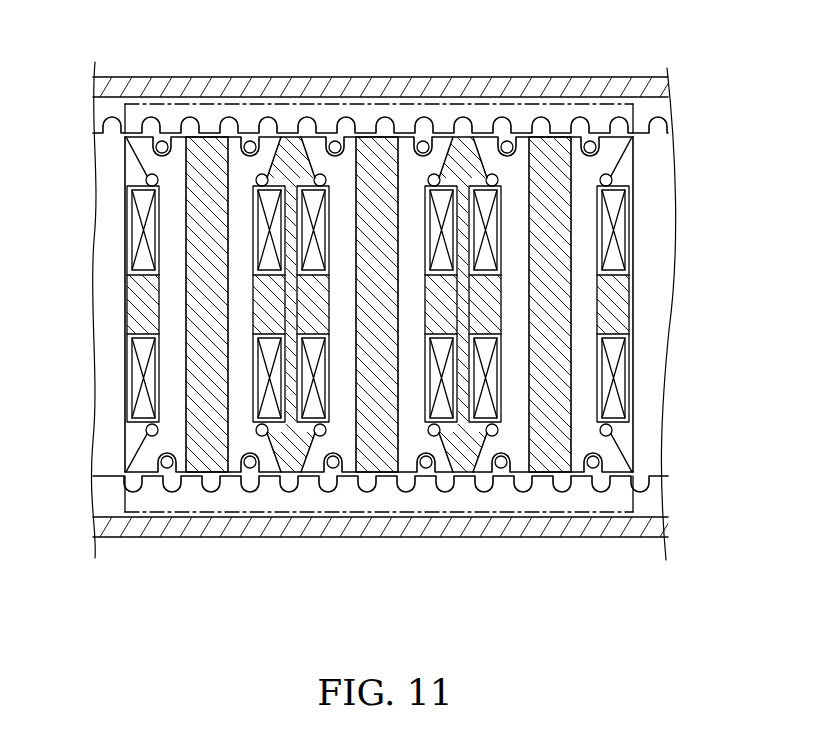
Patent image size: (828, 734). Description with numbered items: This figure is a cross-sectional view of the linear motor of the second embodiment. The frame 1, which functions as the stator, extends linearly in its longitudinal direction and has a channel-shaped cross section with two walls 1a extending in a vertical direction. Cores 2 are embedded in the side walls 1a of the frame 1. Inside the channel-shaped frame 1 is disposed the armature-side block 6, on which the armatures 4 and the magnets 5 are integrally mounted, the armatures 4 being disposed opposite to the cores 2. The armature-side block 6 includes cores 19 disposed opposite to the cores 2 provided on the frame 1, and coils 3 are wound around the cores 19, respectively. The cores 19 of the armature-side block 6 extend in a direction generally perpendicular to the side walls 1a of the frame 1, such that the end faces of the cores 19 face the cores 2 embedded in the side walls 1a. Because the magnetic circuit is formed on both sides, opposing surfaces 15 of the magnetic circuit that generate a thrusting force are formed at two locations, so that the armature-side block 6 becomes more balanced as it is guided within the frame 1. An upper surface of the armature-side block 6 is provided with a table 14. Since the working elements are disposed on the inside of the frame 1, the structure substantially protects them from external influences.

The frame 1 is at (130, 95).
The wall 1a is at (582, 86).
The core 2 is at (333, 112).
The coil 3 is at (452, 145).
The armature 4 is at (317, 152).
The magnet 5 is at (195, 465).
The armature-side block 6 is at (617, 303).
The table 14 is at (210, 115).
The opposing surface 15 is at (647, 143).
The core 19 is at (408, 145).